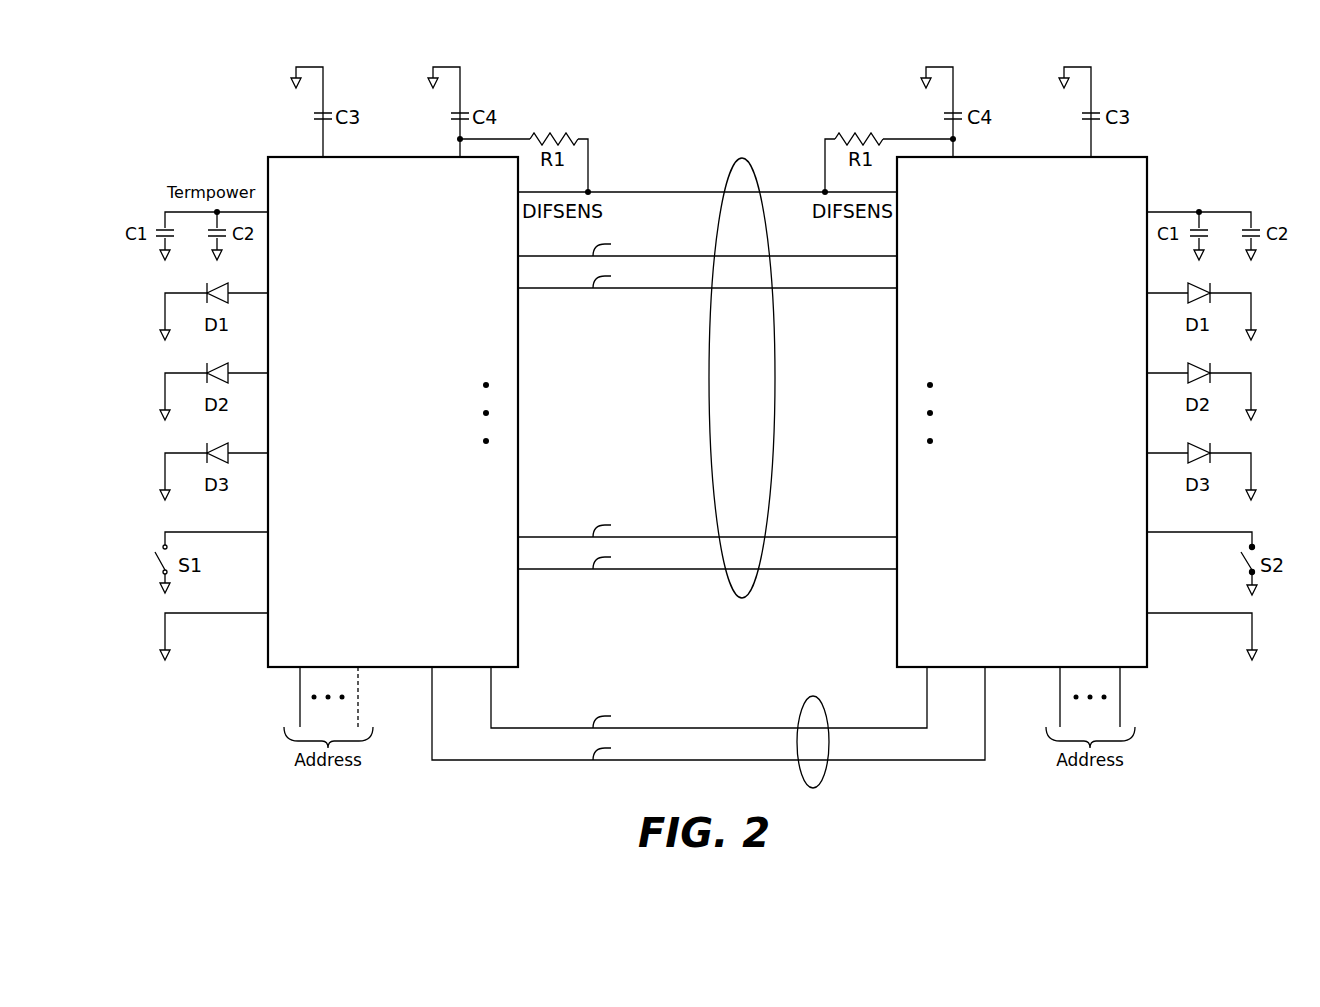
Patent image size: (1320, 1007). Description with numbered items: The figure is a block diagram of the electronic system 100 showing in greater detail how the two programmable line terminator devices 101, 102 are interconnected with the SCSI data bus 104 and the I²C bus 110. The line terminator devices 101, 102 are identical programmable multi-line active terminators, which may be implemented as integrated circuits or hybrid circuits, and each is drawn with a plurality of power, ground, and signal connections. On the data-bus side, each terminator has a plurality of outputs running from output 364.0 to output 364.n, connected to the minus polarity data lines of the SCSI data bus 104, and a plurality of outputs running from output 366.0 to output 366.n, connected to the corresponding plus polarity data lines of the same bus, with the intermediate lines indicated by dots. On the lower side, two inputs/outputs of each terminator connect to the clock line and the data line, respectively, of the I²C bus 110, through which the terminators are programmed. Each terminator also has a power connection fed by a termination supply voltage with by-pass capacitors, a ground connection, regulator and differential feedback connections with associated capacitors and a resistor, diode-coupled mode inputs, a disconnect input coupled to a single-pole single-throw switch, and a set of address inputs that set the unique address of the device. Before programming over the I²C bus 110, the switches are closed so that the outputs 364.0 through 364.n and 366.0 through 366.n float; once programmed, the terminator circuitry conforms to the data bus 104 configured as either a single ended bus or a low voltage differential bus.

The electronic system 100 is at (217, 717).
The line terminator device 101 is at (378, 437).
The line terminator device 102 is at (1006, 437).
The SCSI data bus 104 is at (742, 598).
The I²C bus 110 is at (813, 696).
The output 364.n is at (709, 250).
The output 366.n is at (709, 282).
The output 364.0 is at (709, 531).
The output 366.0 is at (709, 563).